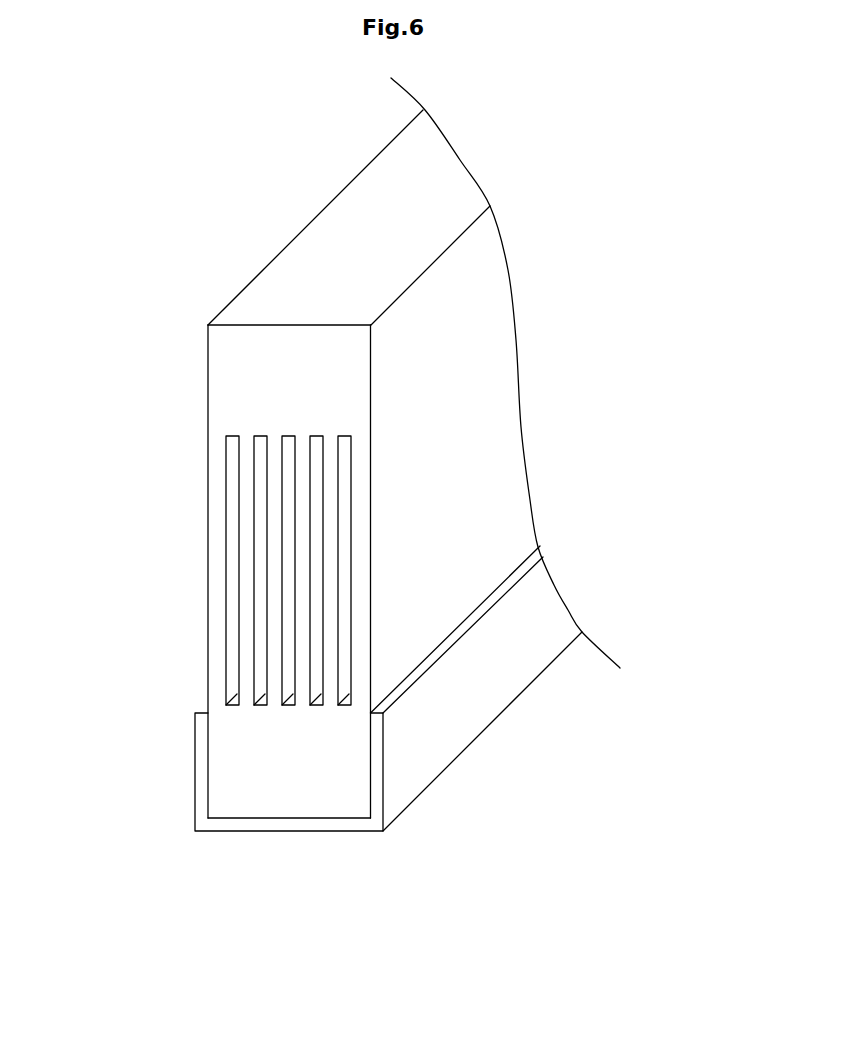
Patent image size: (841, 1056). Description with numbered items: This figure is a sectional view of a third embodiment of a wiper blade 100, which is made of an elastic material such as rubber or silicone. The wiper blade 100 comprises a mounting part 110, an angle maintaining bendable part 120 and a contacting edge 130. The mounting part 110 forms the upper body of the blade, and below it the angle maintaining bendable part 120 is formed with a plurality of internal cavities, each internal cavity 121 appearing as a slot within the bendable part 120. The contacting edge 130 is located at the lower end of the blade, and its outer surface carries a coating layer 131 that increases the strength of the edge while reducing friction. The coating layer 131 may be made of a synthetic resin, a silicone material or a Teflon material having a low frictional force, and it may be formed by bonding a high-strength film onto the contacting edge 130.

The wiper blade 100 is at (469, 453).
The mounting part 110 is at (260, 373).
The angle maintaining bendable part 120 is at (244, 717).
The internal cavity 121 is at (262, 662).
The contacting edge 130 is at (325, 785).
The coating layer 131 is at (377, 762).